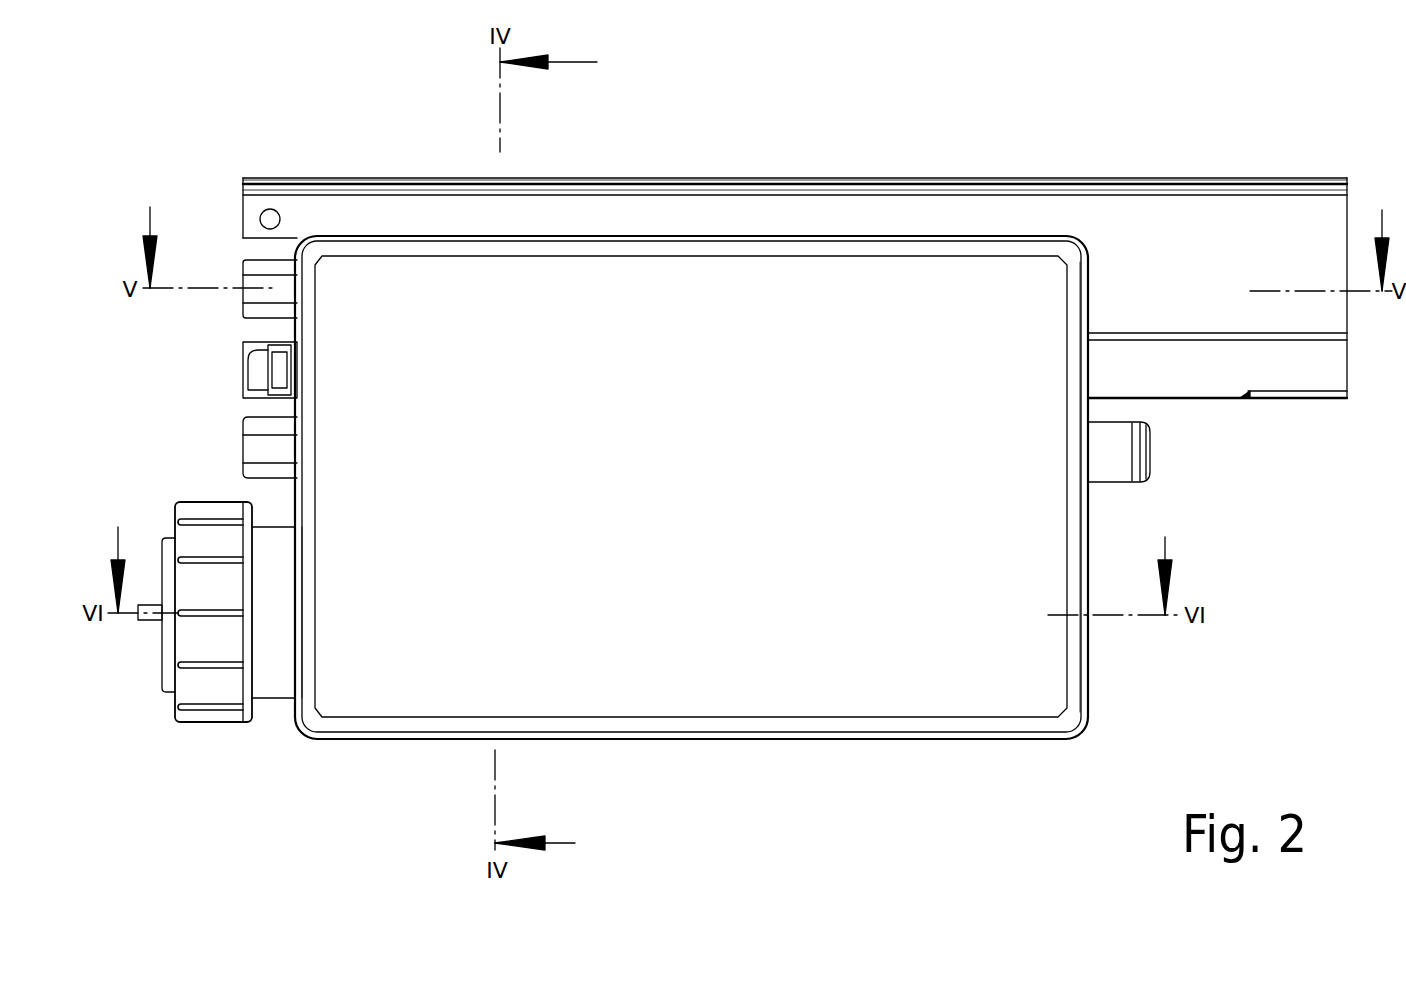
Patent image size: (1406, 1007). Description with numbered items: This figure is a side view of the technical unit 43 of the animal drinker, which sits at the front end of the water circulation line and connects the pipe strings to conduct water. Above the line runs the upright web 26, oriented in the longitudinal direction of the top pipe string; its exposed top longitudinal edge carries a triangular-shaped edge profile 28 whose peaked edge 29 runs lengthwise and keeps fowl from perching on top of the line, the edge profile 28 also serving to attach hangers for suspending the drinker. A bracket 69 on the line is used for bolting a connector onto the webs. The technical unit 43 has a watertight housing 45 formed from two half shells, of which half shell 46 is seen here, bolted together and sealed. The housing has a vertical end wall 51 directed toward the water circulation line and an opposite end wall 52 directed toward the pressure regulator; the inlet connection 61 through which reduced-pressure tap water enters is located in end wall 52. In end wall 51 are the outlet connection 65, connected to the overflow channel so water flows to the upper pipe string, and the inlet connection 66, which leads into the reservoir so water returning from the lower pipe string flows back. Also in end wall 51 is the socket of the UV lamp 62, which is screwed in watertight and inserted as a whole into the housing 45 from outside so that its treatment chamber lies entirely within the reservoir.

The upright web 26 is at (646, 215).
The edge profile 28 is at (806, 190).
The peaked edge 29 is at (920, 180).
The technical unit 43 is at (1265, 475).
The watertight housing 45 is at (710, 700).
The half shell 46 is at (958, 659).
The end wall 51 is at (293, 714).
The end wall 52 is at (1090, 686).
The inlet connection 61 is at (1115, 472).
The UV lamp 62 is at (280, 607).
The outlet connection 65 is at (273, 287).
The inlet connection 66 is at (258, 445).
The bracket 69 is at (253, 203).